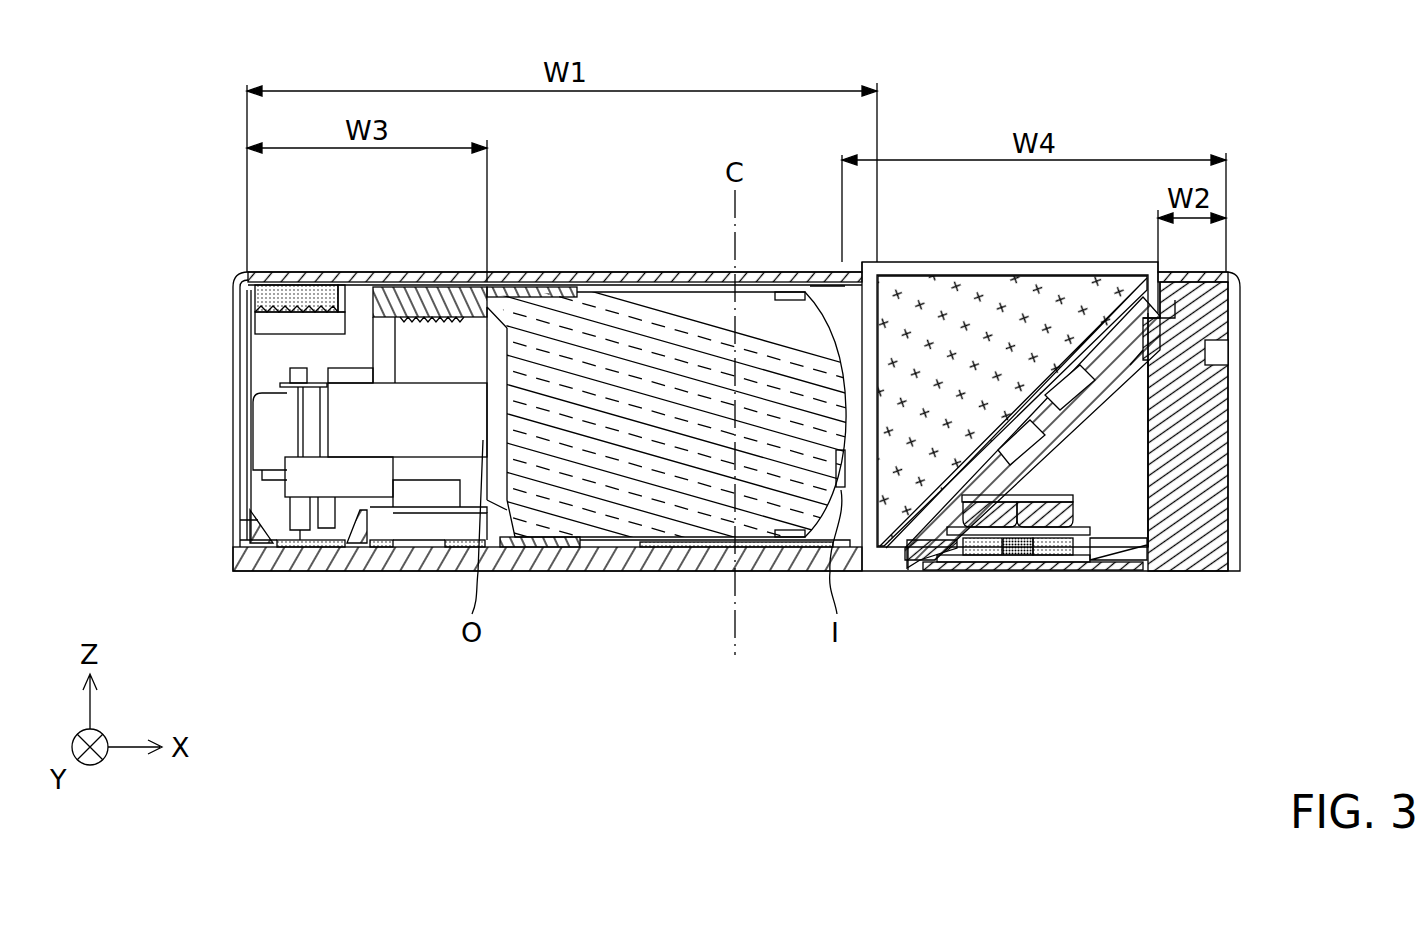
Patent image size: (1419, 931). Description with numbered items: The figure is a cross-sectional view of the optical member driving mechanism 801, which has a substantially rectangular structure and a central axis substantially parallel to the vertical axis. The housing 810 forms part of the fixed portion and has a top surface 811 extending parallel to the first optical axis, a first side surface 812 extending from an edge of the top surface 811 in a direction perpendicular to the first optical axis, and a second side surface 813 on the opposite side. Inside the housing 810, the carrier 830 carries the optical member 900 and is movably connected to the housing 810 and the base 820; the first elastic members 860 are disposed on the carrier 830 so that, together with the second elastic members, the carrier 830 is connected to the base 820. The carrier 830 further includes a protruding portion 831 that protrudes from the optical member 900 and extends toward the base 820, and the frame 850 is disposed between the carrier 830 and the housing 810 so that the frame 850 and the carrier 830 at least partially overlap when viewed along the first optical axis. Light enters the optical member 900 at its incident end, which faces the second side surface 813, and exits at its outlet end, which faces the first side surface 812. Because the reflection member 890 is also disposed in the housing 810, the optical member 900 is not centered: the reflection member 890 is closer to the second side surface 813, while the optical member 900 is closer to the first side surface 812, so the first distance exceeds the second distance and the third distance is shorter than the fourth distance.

The optical member driving mechanism 801 is at (152, 78).
The housing 810 is at (233, 283).
The top surface 811 is at (673, 283).
The first side surface 812 is at (238, 447).
The second side surface 813 is at (1236, 338).
The base 820 is at (280, 571).
The carrier 830 is at (404, 295).
The protruding portion 831 is at (460, 283).
The frame 850 is at (300, 295).
The first elastic members 860 is at (290, 392).
The reflection member 890 is at (1115, 437).
The optical member 900 is at (605, 425).